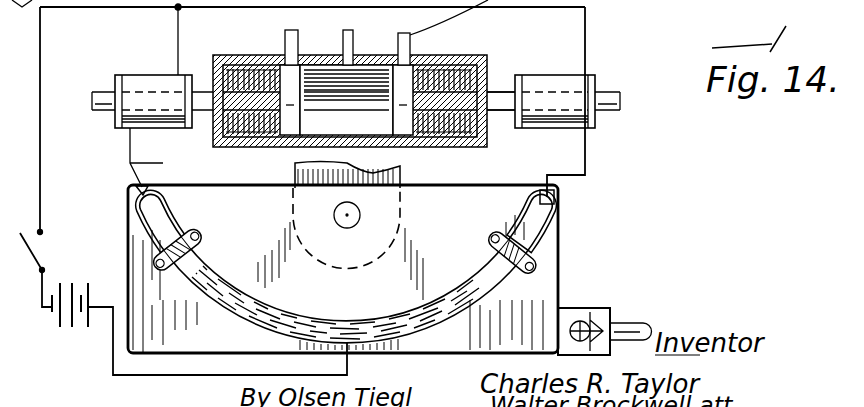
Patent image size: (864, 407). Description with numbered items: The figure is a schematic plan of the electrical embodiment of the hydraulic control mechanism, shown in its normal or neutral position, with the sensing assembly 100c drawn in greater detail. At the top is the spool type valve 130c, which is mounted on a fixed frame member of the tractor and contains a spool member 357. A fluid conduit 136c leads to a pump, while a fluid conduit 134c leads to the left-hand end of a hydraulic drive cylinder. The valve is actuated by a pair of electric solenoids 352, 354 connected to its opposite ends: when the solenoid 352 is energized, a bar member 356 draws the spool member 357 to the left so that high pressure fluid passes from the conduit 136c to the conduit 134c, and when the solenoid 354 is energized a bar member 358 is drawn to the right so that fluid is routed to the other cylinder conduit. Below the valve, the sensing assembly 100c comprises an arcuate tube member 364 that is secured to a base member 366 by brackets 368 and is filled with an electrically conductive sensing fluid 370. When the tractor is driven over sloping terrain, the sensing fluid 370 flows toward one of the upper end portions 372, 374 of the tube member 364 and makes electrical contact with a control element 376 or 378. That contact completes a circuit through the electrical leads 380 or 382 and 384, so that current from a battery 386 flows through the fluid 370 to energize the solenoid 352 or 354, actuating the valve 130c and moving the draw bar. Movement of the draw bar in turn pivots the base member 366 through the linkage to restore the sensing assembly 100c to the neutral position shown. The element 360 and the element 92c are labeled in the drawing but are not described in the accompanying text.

The electric solenoid 352 is at (152, 75).
The electric solenoid 354 is at (563, 88).
The bar member 356 is at (200, 110).
The spool member 357 is at (336, 108).
The bar member 358 is at (493, 93).
The spool type valve 130c is at (461, 46).
The fluid conduit 134c is at (284, 37).
The fluid conduit 136c is at (355, 42).
The lever 360 is at (496, 32).
The arcuate tube member 364 is at (203, 265).
The base member 366 is at (488, 185).
The brackets 368 is at (490, 233).
The electrically conductive sensing fluid 370 is at (330, 318).
The upper end portion 372 is at (147, 227).
The upper end portion 374 is at (538, 223).
The control element 376 is at (130, 195).
The control element 378 is at (558, 192).
The electrical lead 380 is at (167, 167).
The electrical lead 382 is at (587, 136).
The electrical lead 384 is at (40, 140).
The battery 386 is at (78, 337).
The sensing assembly 100c is at (616, 243).
The indicator 92c is at (575, 307).